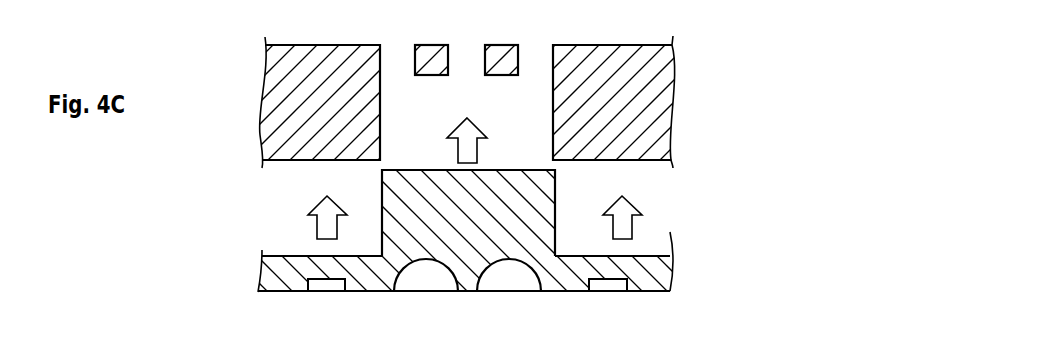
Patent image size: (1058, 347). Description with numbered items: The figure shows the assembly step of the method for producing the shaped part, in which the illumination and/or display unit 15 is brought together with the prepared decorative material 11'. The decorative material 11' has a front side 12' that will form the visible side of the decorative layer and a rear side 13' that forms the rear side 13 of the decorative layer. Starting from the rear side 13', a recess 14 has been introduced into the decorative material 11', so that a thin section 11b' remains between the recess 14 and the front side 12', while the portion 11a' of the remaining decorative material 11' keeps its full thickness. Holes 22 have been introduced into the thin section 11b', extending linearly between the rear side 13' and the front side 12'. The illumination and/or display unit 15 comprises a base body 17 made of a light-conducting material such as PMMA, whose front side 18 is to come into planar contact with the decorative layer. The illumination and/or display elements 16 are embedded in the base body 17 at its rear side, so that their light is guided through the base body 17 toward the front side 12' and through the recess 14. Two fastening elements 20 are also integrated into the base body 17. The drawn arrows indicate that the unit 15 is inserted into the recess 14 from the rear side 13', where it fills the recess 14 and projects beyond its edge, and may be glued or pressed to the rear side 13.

The portion of the remaining decorative material 11a' is at (320, 140).
The section of the decorative material 11b' is at (471, 50).
The holes 22 is at (465, 63).
The front side of the decorative material 12' is at (613, 23).
The decorative material 11' is at (642, 145).
The rear side of the decorative material 13' is at (643, 179).
The recess 14 is at (477, 115).
The illumination and/or display unit 15 is at (251, 203).
The front side of the base body 18 is at (290, 246).
The rear side of the decorative layer 13 is at (491, 173).
The fastening elements 20 is at (330, 284).
The illumination and/or display elements 16 is at (424, 277).
The base body 17 is at (503, 216).